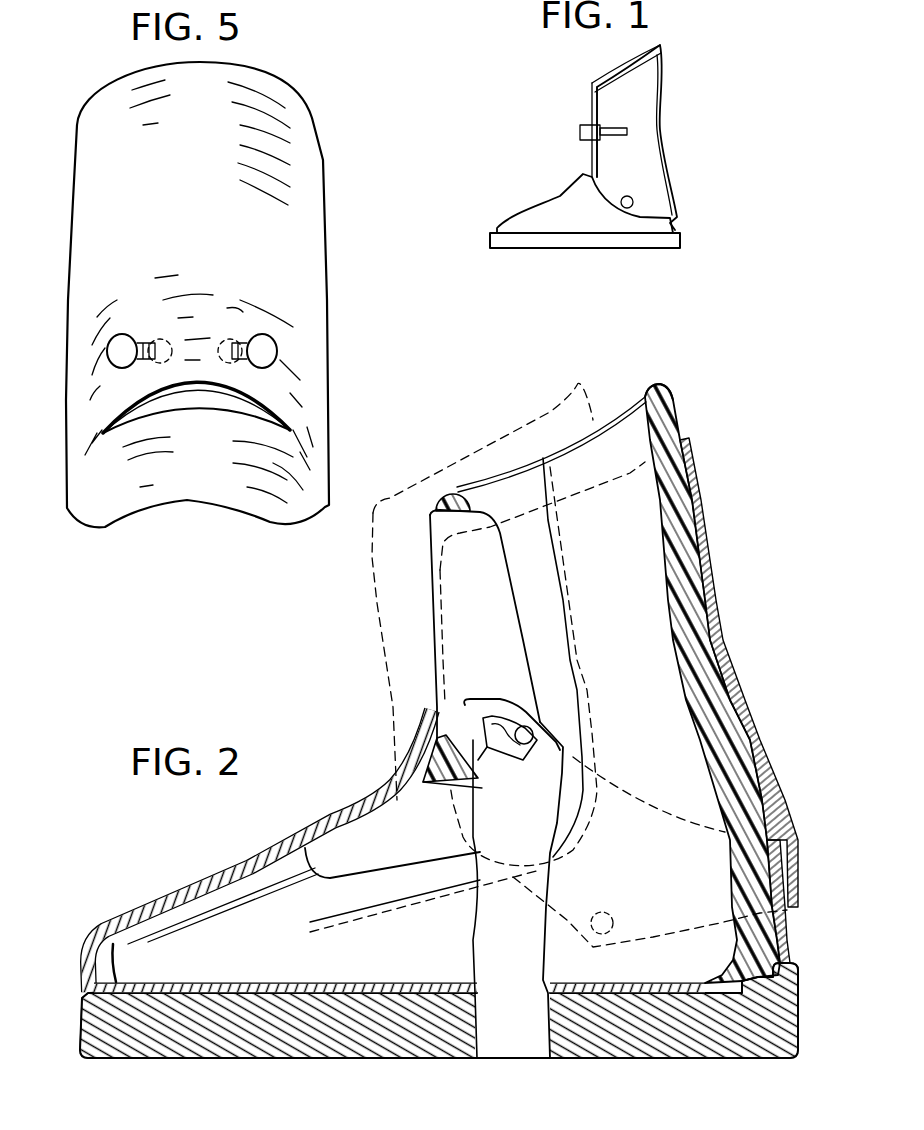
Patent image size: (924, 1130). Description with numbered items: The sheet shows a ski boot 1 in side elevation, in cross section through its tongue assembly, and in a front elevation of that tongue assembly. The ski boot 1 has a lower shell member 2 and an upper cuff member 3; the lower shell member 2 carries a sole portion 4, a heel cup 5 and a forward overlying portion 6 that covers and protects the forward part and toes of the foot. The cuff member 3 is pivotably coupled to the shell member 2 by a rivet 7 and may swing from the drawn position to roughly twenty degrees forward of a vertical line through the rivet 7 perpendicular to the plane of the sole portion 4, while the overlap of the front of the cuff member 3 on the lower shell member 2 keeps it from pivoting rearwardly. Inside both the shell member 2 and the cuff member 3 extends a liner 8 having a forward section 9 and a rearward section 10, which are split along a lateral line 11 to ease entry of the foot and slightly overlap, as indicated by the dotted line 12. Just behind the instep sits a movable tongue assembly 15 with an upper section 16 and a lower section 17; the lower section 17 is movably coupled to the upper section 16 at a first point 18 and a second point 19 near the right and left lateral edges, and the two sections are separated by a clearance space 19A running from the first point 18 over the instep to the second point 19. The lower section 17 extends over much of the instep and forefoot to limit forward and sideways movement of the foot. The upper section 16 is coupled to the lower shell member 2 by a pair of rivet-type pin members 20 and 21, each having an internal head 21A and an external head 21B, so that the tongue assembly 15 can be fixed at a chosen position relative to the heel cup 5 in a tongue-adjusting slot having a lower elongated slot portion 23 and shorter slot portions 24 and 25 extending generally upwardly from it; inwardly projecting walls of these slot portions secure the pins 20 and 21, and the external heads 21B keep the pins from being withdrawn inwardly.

In FIG. 1, the ski boot 1 is at (665, 126).
In FIG. 2, the ski boot 1 is at (686, 428).
In FIG. 1, the lower shell member 2 is at (548, 205).
In FIG. 2, the lower shell member 2 is at (137, 903).
In FIG. 1, the upper cuff member 3 is at (650, 168).
In FIG. 2, the upper cuff member 3 is at (720, 583).
In FIG. 1, the sole portion 4 is at (625, 249).
In FIG. 2, the sole portion 4 is at (660, 1060).
In FIG. 2, the heel cup 5 is at (768, 968).
In FIG. 2, the forward overlying portion 6 is at (292, 836).
In FIG. 2, the rivet 7 is at (614, 918).
In FIG. 1, the liner 8 is at (618, 64).
In FIG. 2, the liner 8 is at (673, 392).
In FIG. 2, the forward section 9 is at (492, 480).
In FIG. 2, the rearward section 10 is at (592, 447).
In FIG. 2, the lateral line 11 is at (548, 556).
In FIG. 2, the overlap of liner sections 12 is at (578, 604).
In FIG. 1, the tongue assembly 15 is at (584, 150).
In FIG. 2, the tongue assembly 15 is at (427, 622).
In FIG. 5, the upper section 16 is at (188, 226).
In FIG. 2, the upper section 16 is at (456, 599).
In FIG. 5, the lower section 17 is at (173, 490).
In FIG. 2, the lower section 17 is at (355, 847).
In FIG. 5, the first point 18 is at (305, 425).
In FIG. 5, the second point 19 is at (90, 425).
In FIG. 5, the clearance space 19A is at (193, 395).
In FIG. 2, the clearance space 19A is at (466, 772).
In FIG. 5, the pin member 20 is at (256, 326).
In FIG. 2, the pin member 20 is at (545, 733).
In FIG. 5, the pin member 21 is at (132, 326).
In FIG. 5, the internal head 21A is at (194, 331).
In FIG. 5, the external head 21B is at (266, 352).
In FIG. 2, the lower elongated slot portion 23 is at (495, 757).
In FIG. 2, the shorter slot portion 24 is at (487, 705).
In FIG. 2, the shorter slot portion 25 is at (530, 712).